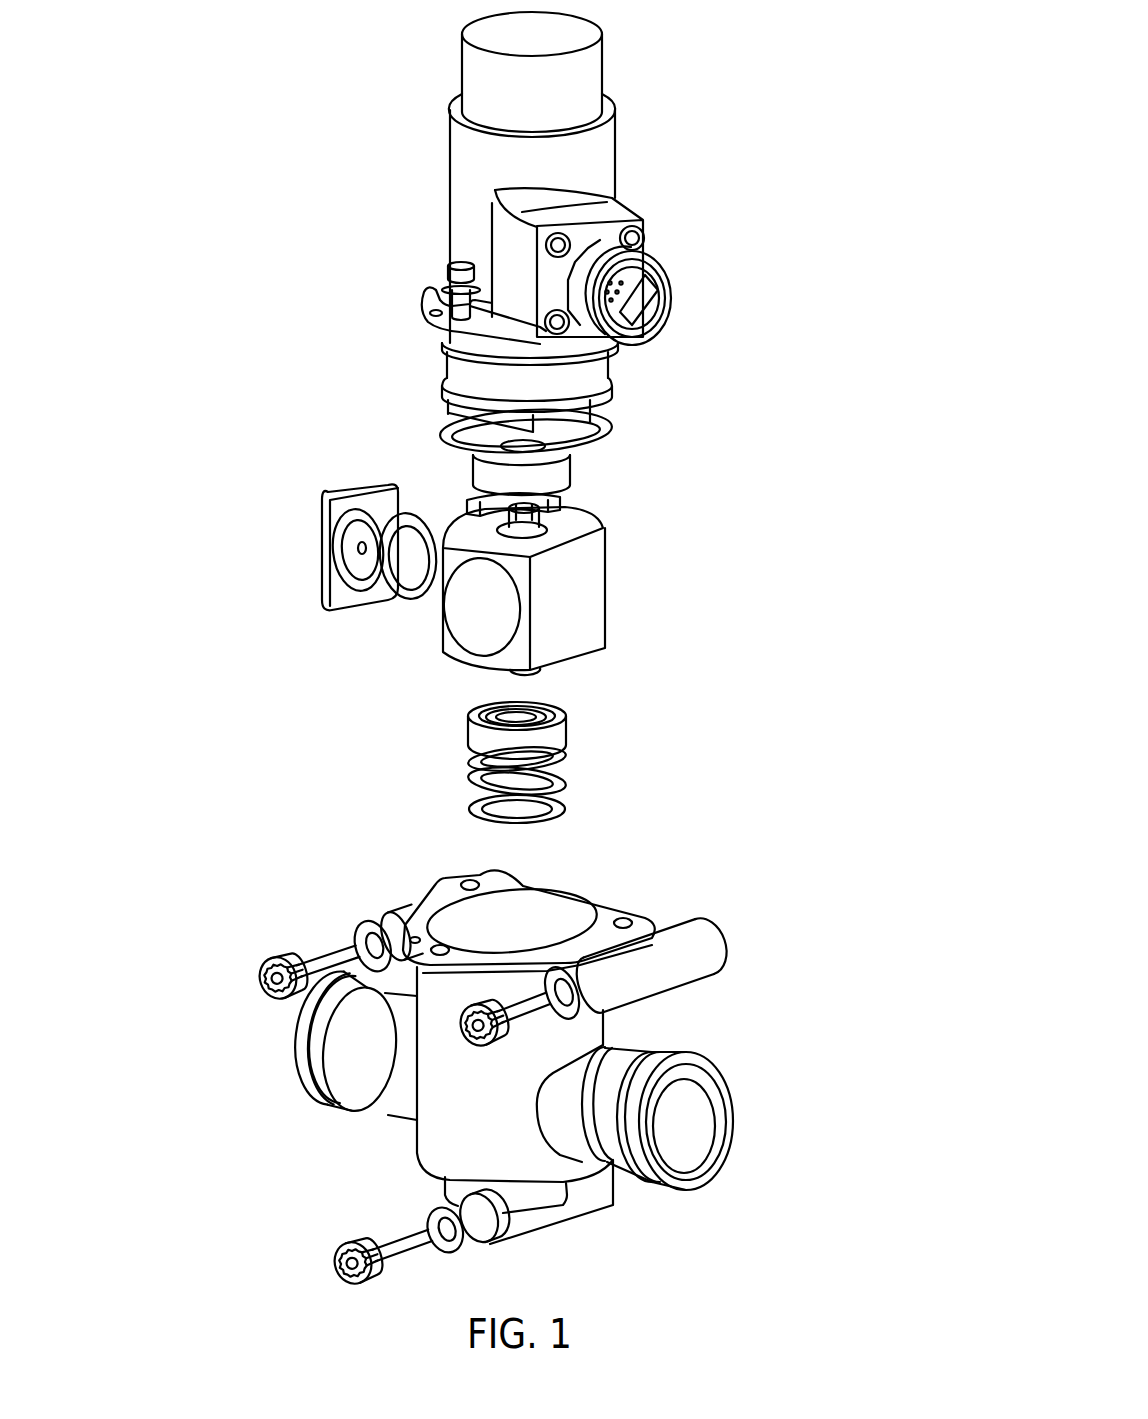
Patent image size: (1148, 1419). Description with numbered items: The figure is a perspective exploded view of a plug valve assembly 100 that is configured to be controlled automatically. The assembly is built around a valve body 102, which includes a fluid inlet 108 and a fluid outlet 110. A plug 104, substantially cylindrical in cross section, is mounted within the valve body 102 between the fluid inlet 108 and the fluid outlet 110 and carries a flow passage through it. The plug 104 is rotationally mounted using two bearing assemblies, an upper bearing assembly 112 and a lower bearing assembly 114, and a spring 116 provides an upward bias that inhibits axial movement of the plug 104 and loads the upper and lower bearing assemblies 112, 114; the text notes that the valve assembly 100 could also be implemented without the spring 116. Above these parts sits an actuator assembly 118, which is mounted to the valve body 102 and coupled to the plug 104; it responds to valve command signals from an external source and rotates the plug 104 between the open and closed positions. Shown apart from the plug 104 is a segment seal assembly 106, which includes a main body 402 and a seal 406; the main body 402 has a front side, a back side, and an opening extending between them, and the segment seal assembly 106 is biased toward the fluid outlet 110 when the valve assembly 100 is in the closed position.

The plug valve assembly 100 is at (628, 231).
The valve body 102 is at (506, 1075).
The plug 104 is at (622, 591).
The segment seal assembly 106 is at (322, 543).
The fluid inlet 108 is at (694, 1128).
The fluid outlet 110 is at (297, 1045).
The upper bearing assembly 112 is at (572, 463).
The lower bearing assembly 114 is at (573, 714).
The spring 116 is at (578, 733).
The actuator assembly 118 is at (606, 31).
The main body 402 is at (345, 605).
The seal 406 is at (403, 600).